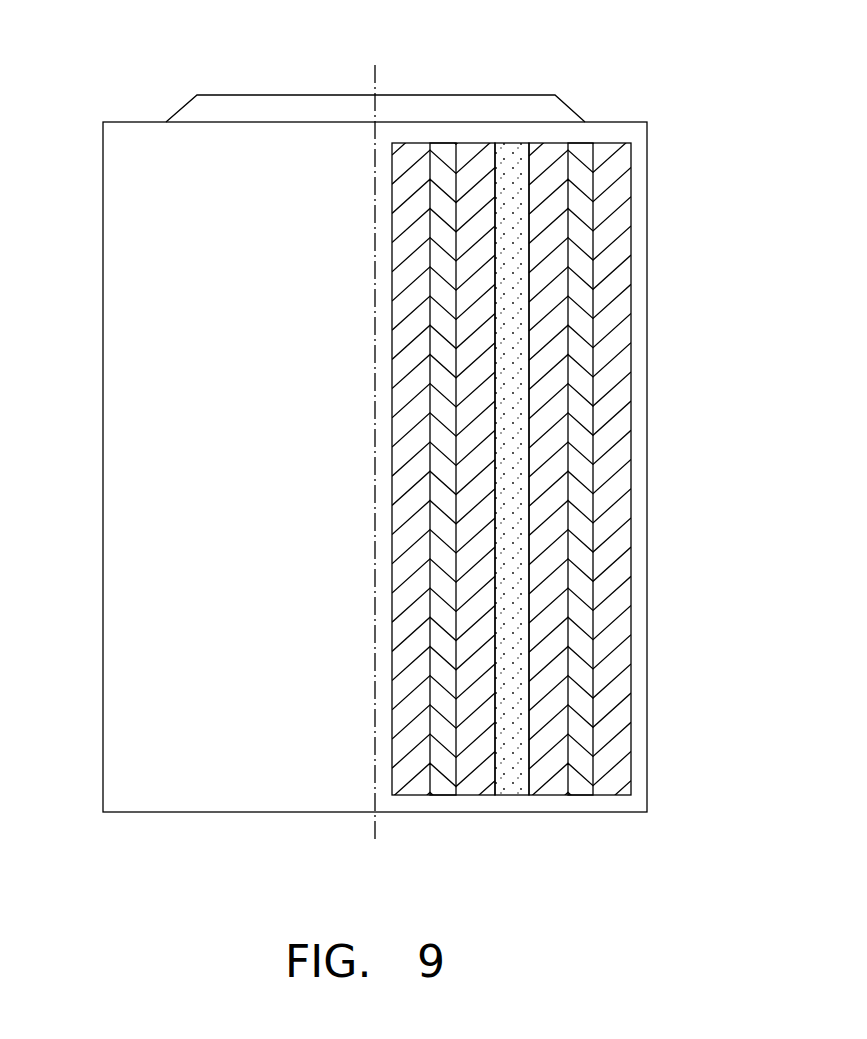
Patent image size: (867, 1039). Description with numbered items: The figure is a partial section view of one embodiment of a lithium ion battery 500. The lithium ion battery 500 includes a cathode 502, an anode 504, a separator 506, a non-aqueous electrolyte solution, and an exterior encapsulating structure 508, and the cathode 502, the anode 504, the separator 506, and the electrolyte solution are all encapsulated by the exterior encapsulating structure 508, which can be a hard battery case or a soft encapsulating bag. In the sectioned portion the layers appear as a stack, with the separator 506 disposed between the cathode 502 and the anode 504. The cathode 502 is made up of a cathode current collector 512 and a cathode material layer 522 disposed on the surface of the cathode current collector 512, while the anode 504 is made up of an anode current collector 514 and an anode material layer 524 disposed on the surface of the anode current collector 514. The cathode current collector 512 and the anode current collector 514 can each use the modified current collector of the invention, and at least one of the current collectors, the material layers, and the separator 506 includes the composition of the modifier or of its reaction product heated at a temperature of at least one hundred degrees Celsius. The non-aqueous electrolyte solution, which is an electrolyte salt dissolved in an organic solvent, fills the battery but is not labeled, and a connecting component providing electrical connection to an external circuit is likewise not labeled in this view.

The lithium ion battery 500 is at (140, 52).
The exterior encapsulating structure 508 is at (647, 203).
The cathode 502 is at (737, 528).
The cathode current collector 512 is at (432, 555).
The cathode material layer 522 is at (478, 636).
The anode 504 is at (737, 297).
The anode current collector 514 is at (583, 320).
The anode material layer 524 is at (548, 410).
The separator 506 is at (508, 702).